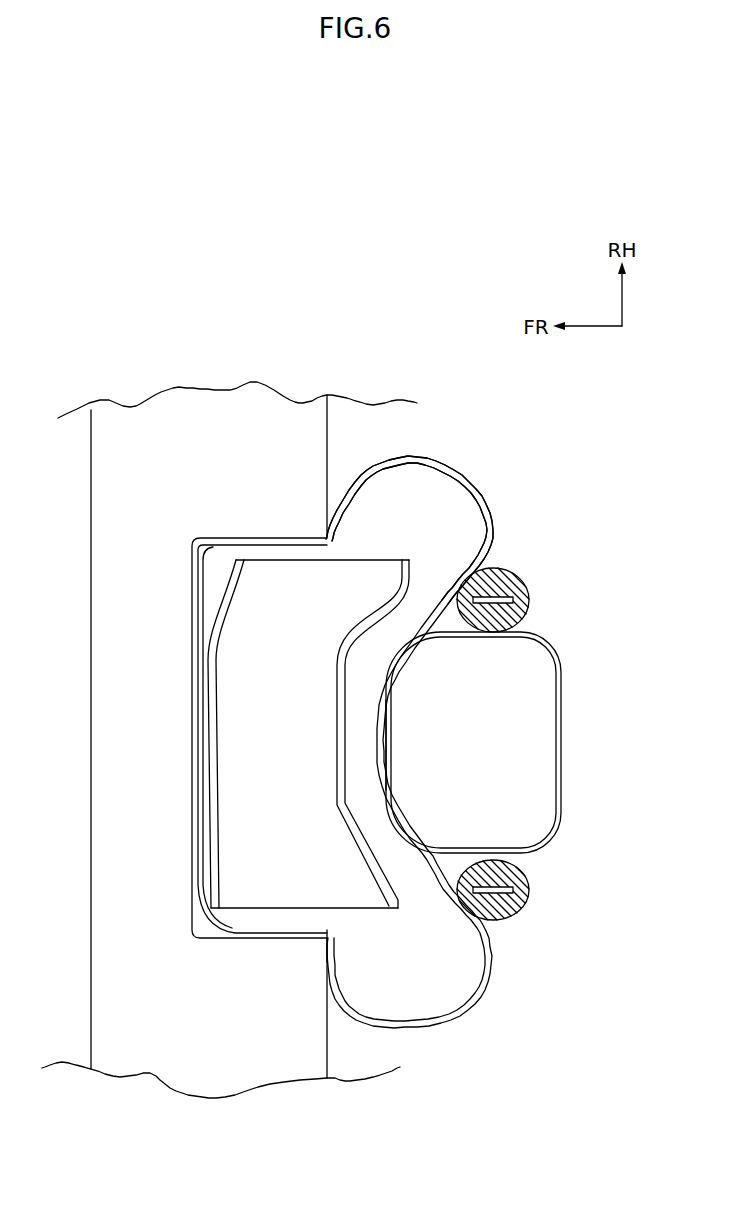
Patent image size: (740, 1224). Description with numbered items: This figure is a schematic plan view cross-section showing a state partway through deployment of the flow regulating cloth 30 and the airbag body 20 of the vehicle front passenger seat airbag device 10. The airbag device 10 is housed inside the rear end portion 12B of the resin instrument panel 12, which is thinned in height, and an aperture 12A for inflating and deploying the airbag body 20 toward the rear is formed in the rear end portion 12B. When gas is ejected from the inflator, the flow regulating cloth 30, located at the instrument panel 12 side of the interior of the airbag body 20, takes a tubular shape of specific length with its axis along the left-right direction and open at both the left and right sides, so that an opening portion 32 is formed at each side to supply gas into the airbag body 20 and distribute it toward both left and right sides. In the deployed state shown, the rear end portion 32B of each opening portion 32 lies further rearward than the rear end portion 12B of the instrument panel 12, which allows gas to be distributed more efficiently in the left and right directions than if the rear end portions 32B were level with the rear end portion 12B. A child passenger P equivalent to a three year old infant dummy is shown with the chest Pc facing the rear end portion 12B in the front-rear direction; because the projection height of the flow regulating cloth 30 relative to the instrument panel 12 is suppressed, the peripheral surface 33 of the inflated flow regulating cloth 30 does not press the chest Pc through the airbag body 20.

The vehicle front passenger seat airbag device 10 is at (444, 440).
The instrument panel 12 is at (172, 422).
The aperture 12A is at (333, 932).
The rear end portion 12B is at (328, 1042).
The airbag body 20 is at (463, 467).
The flow regulating cloth 30 is at (412, 557).
The opening portion 32 is at (323, 540).
The rear end portion 32B is at (400, 558).
The peripheral surface 33 is at (362, 832).
The child passenger P is at (568, 733).
The chest Pc is at (383, 755).